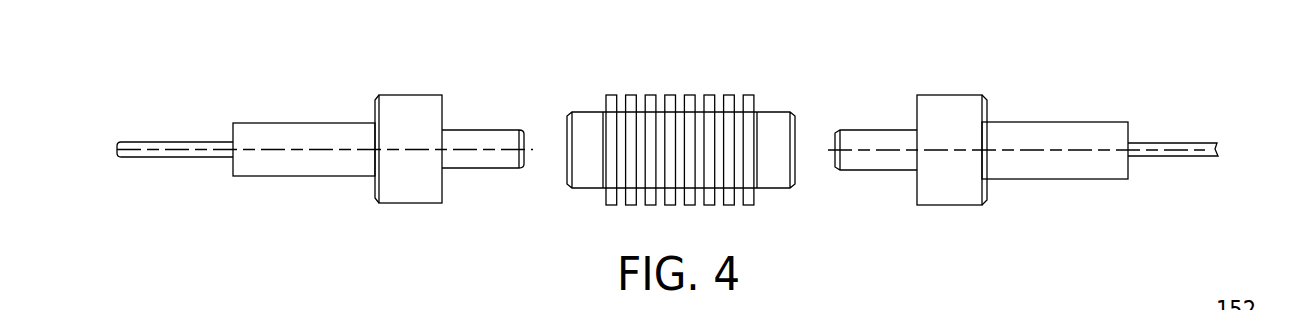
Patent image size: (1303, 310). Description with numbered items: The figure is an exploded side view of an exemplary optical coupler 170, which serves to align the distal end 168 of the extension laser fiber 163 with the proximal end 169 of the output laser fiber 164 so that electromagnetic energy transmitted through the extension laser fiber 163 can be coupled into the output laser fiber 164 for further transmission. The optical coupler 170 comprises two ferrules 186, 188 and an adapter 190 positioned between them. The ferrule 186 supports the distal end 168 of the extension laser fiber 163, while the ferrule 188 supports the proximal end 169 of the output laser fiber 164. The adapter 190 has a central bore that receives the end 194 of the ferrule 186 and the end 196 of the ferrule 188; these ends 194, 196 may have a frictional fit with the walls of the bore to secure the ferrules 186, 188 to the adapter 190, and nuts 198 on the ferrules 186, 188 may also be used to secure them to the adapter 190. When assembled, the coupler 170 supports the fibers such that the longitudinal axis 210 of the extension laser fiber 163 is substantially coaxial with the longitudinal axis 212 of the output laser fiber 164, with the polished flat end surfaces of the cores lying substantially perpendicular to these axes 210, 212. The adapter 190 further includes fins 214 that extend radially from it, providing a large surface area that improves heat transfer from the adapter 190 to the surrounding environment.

The optical coupler 170 is at (898, 52).
The extension laser fiber 163 is at (143, 155).
The output laser fiber 164 is at (1200, 142).
The distal end 168 is at (207, 142).
The proximal end 169 is at (1165, 156).
The ferrule 186 is at (322, 128).
The ferrule 188 is at (1040, 172).
The adapter 190 is at (709, 102).
The end 194 is at (485, 168).
The end 196 is at (875, 132).
The nut 198 is at (409, 103).
The longitudinal axis 210 is at (173, 148).
The longitudinal axis 212 is at (1153, 148).
The fin 214 is at (630, 103).